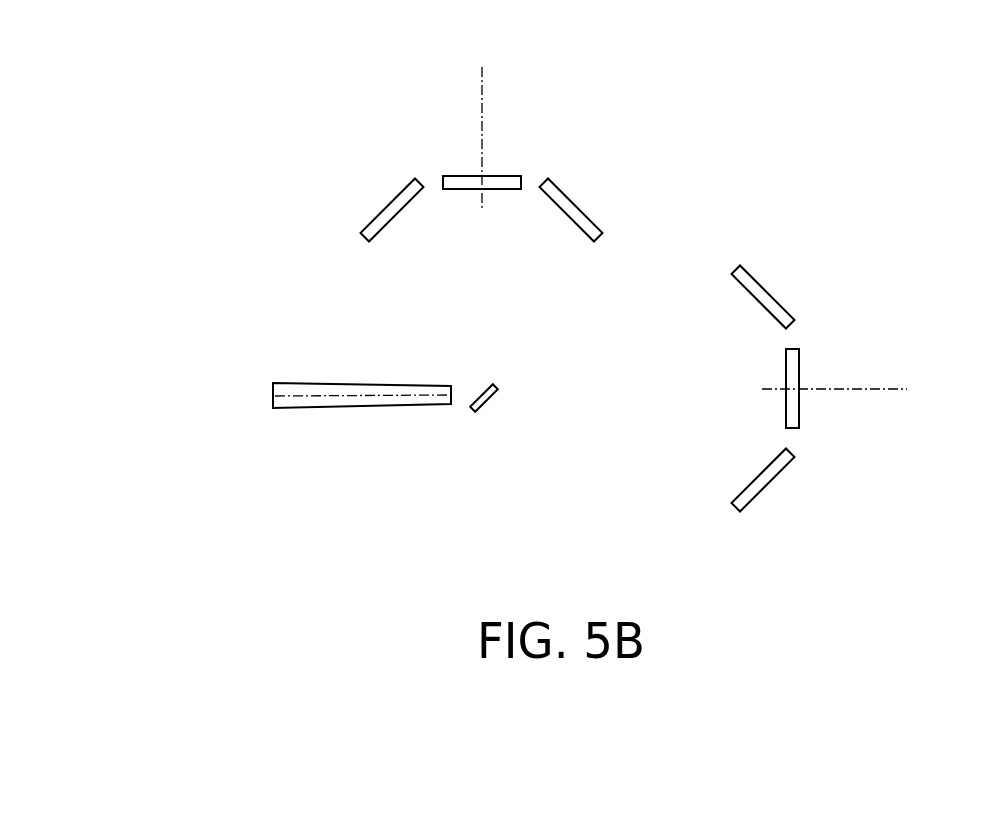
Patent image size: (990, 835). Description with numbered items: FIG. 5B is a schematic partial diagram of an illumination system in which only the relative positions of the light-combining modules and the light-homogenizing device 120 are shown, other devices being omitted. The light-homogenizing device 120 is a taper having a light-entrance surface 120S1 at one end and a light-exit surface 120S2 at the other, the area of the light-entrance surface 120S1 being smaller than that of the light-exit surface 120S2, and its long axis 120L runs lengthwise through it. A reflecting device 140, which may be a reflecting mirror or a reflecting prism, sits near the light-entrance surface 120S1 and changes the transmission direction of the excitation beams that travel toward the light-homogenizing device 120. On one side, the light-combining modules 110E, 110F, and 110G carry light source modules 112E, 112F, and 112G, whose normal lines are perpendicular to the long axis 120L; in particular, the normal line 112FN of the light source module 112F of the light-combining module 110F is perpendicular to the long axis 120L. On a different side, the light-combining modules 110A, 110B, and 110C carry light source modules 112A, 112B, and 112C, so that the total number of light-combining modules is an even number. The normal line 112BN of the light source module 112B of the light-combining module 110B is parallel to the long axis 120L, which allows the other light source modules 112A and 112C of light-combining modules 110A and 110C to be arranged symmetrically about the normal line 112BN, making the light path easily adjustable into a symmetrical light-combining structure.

The light-combining module 110A is at (812, 261).
The light-combining module 110B is at (876, 396).
The light-combining module 110C is at (812, 515).
The light-combining module 110E is at (353, 178).
The light-combining module 110F is at (514, 120).
The light-combining module 110G is at (611, 179).
The light source module 112A is at (755, 287).
The light source module 112B is at (793, 365).
The normal line 112BN is at (833, 415).
The light source module 112C is at (755, 490).
The light source module 112E is at (380, 218).
The light source module 112F is at (462, 180).
The normal line 112FN is at (482, 120).
The light source module 112G is at (582, 222).
The light-homogenizing device 120 is at (363, 441).
The long axis 120L is at (403, 400).
The light-entrance surface 120S1 is at (453, 398).
The light-exit surface 120S2 is at (272, 398).
The reflecting device 140 is at (488, 385).